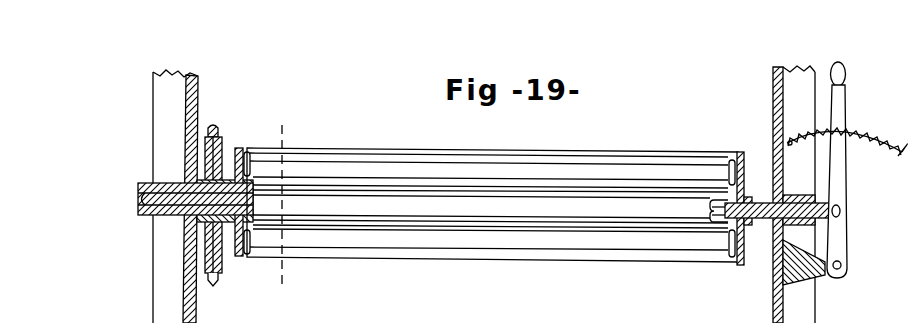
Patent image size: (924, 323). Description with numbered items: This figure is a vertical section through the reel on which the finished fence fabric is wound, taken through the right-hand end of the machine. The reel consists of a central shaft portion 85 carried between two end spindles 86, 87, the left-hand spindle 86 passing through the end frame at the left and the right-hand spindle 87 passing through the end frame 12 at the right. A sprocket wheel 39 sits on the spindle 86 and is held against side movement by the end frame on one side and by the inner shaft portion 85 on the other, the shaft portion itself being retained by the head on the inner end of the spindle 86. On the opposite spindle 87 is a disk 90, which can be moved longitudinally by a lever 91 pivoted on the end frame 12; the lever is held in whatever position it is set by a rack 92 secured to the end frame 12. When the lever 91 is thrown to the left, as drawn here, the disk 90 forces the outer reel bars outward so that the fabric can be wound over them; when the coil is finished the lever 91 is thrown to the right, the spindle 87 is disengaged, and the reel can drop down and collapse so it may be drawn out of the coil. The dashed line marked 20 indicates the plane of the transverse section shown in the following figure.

The end frame 12 is at (808, 318).
The section line 20 is at (289, 135).
The sprocket wheel 39 is at (213, 275).
The central shaft portion 85 is at (255, 205).
The end spindle 86 is at (137, 200).
The end spindle 87 is at (848, 213).
The disk 90 is at (743, 152).
The lever 91 is at (841, 80).
The rack 92 is at (885, 138).